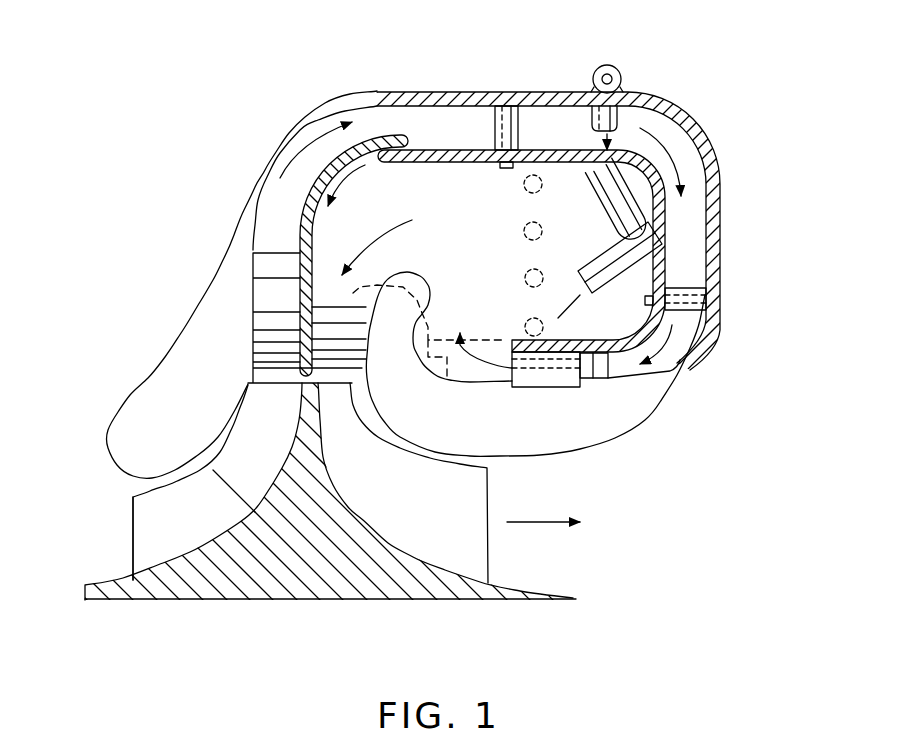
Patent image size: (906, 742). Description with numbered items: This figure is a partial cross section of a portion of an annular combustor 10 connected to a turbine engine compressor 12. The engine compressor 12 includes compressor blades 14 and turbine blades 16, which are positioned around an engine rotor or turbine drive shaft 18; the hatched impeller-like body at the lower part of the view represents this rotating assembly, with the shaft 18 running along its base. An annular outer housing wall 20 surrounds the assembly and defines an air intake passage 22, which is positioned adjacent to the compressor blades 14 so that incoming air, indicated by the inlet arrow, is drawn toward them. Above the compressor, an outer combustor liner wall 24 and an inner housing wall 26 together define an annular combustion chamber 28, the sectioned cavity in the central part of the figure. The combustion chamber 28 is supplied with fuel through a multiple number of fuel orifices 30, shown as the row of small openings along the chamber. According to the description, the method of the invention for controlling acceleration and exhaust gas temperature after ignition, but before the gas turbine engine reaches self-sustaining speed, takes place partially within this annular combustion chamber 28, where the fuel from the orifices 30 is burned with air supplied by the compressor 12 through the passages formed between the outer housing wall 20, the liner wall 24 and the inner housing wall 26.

The annular combustor 10 is at (312, 98).
The turbine engine compressor 12 is at (240, 601).
The compressor blades 14 is at (133, 540).
The turbine blades 16 is at (489, 488).
The turbine drive shaft 18 is at (323, 600).
The annular outer housing wall 20 is at (722, 211).
The air intake passage 22 is at (131, 506).
The outer combustor liner wall 24 is at (558, 168).
The inner housing wall 26 is at (322, 232).
The annular combustion chamber 28 is at (494, 266).
The fuel orifices 30 is at (521, 187).